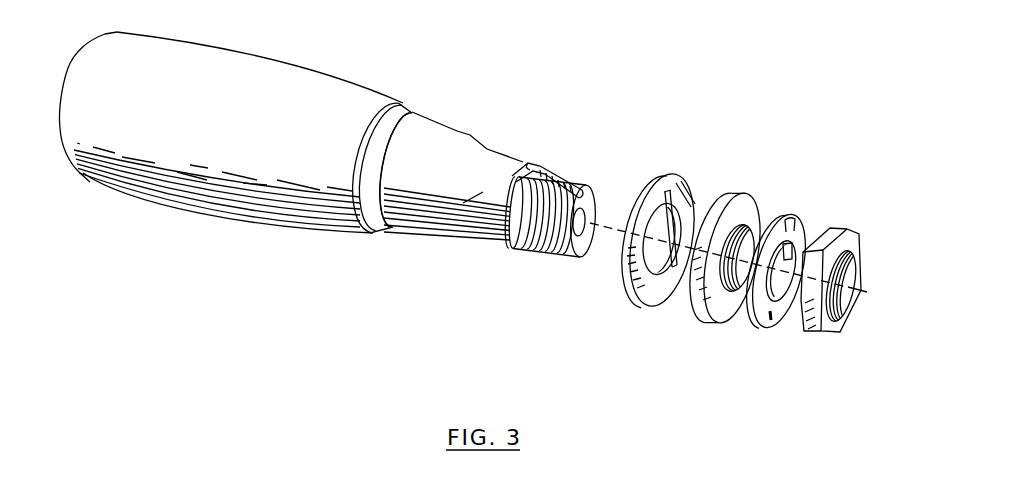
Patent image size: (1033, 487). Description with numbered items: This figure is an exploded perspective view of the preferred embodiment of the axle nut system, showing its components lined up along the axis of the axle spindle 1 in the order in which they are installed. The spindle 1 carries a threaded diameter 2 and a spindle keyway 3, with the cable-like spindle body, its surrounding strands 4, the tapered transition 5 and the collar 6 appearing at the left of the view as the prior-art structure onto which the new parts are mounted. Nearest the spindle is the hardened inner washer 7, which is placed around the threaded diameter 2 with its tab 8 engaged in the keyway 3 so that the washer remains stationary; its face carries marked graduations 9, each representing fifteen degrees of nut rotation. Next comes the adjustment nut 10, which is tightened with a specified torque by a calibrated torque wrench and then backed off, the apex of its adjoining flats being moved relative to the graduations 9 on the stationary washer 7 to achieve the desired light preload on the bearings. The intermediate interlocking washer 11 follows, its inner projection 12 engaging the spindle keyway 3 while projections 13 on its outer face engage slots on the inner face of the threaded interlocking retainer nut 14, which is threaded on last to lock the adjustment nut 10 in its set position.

The axle spindle 1 is at (243, 53).
The threaded diameter 2 is at (518, 250).
The spindle keyway 3 is at (555, 178).
The cable strands 4 is at (463, 131).
The strain relief cone 5 is at (498, 152).
The collar 6 is at (402, 110).
The hardened inner washer 7 is at (650, 173).
The tab 8 is at (667, 297).
The marked graduations 9 is at (670, 182).
The adjustment nut 10 is at (738, 190).
The intermediate interlocking washer 11 is at (767, 328).
The inner projection 12 is at (786, 218).
The projections 13 is at (802, 218).
The interlocking retainer nut 14 is at (863, 238).